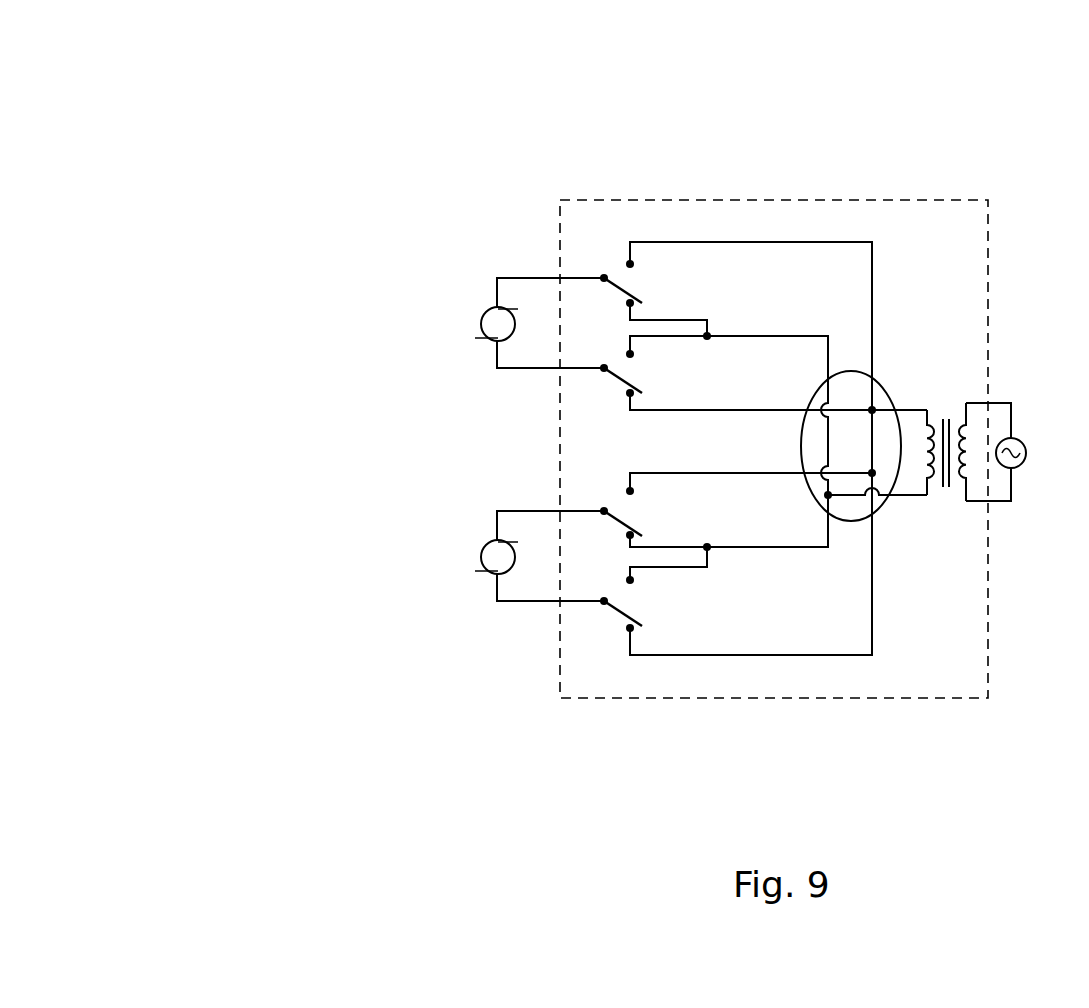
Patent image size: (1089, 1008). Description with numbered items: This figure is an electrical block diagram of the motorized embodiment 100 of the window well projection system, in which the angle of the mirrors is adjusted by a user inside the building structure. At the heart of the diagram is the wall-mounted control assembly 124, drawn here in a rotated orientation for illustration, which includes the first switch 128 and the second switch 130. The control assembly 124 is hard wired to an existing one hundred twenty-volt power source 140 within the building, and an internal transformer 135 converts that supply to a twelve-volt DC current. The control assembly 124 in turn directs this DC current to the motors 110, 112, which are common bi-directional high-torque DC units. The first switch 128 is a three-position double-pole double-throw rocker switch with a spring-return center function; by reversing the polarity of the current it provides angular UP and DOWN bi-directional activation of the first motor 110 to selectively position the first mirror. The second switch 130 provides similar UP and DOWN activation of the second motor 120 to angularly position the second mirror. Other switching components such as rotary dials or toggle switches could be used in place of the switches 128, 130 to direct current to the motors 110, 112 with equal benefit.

The motorized embodiment 100 is at (290, 156).
The first motor 110 is at (485, 310).
The second motor 112 is at (483, 542).
The second motor 120 is at (886, 392).
The control assembly 124 is at (988, 235).
The first switch 128 is at (612, 256).
The second switch 130 is at (597, 620).
The internal transformer 135 is at (947, 500).
The 120-volt power source 140 is at (1021, 441).